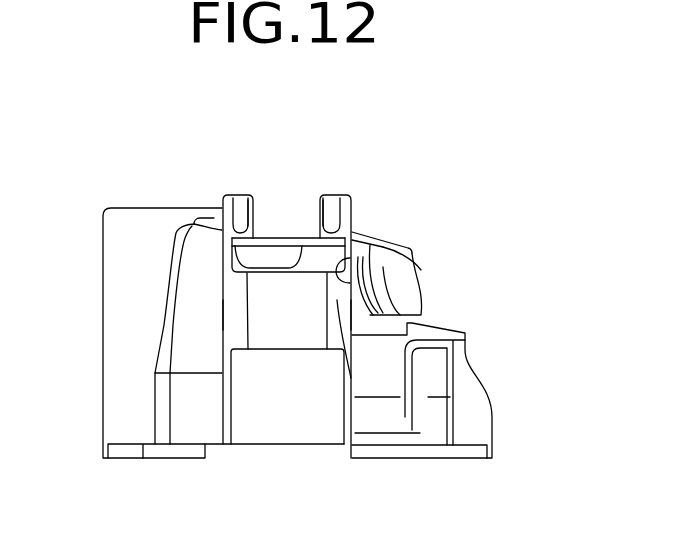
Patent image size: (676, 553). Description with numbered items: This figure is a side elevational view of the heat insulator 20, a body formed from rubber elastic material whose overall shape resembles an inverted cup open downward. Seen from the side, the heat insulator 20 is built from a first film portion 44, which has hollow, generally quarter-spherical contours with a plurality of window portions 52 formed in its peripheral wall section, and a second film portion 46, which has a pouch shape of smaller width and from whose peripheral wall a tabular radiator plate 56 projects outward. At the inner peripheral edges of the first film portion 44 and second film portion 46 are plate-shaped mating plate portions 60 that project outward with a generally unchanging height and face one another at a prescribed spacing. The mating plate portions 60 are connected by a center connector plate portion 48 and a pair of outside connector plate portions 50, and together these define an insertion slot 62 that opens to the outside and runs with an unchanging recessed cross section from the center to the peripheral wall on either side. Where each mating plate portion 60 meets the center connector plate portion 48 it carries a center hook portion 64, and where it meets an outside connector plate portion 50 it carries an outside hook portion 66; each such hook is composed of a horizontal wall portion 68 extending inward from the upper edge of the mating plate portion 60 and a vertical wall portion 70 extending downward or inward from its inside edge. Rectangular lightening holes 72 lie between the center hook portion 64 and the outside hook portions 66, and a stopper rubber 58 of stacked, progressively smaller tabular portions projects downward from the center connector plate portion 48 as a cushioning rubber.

The heat insulator 20 is at (90, 168).
The first film portion 44 is at (387, 376).
The second film portion 46 is at (181, 407).
The center connector plate portion 48 is at (297, 244).
The outside connector plate portion 50 is at (292, 318).
The window portion 52 is at (408, 273).
The radiator plate 56 is at (117, 297).
The stopper rubber 58 is at (272, 263).
The mating plate portion 60 is at (193, 224).
The insertion slot 62 is at (249, 351).
The center hook portion 64 is at (198, 137).
The outside hook portion 66 is at (238, 360).
The horizontal wall portion 68 is at (263, 278).
The vertical wall portion 70 is at (246, 199).
The lightening hole 72 is at (353, 282).